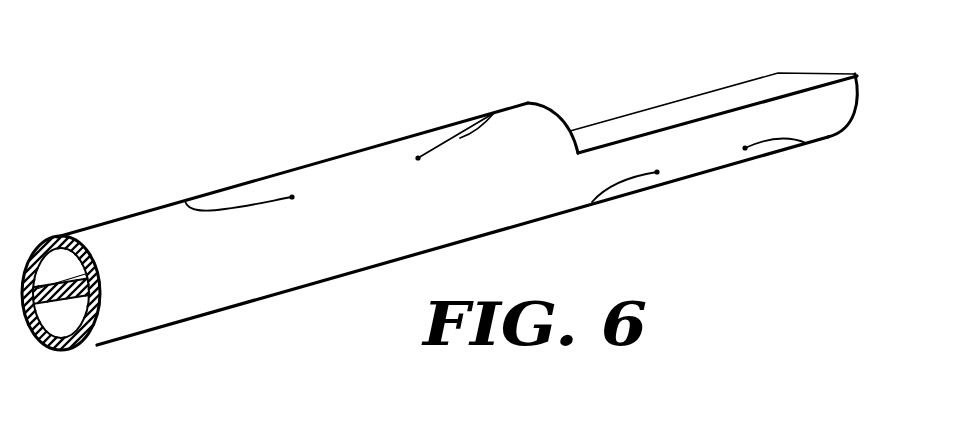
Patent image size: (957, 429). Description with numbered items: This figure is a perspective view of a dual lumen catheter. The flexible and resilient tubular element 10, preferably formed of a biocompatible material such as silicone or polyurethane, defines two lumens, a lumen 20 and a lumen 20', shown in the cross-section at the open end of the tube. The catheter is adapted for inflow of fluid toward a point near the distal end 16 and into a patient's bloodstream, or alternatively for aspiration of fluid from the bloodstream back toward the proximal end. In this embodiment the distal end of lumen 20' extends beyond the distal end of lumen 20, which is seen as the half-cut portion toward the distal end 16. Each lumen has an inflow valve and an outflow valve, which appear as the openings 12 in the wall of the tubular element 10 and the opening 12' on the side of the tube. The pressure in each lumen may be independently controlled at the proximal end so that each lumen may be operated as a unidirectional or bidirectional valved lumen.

The tubular element 10 is at (358, 243).
The side openings 12 is at (484, 146).
The side opening 12' is at (639, 205).
The distal end 16 is at (719, 58).
The central lumen 20 is at (64, 238).
The second lumen 20' is at (67, 335).